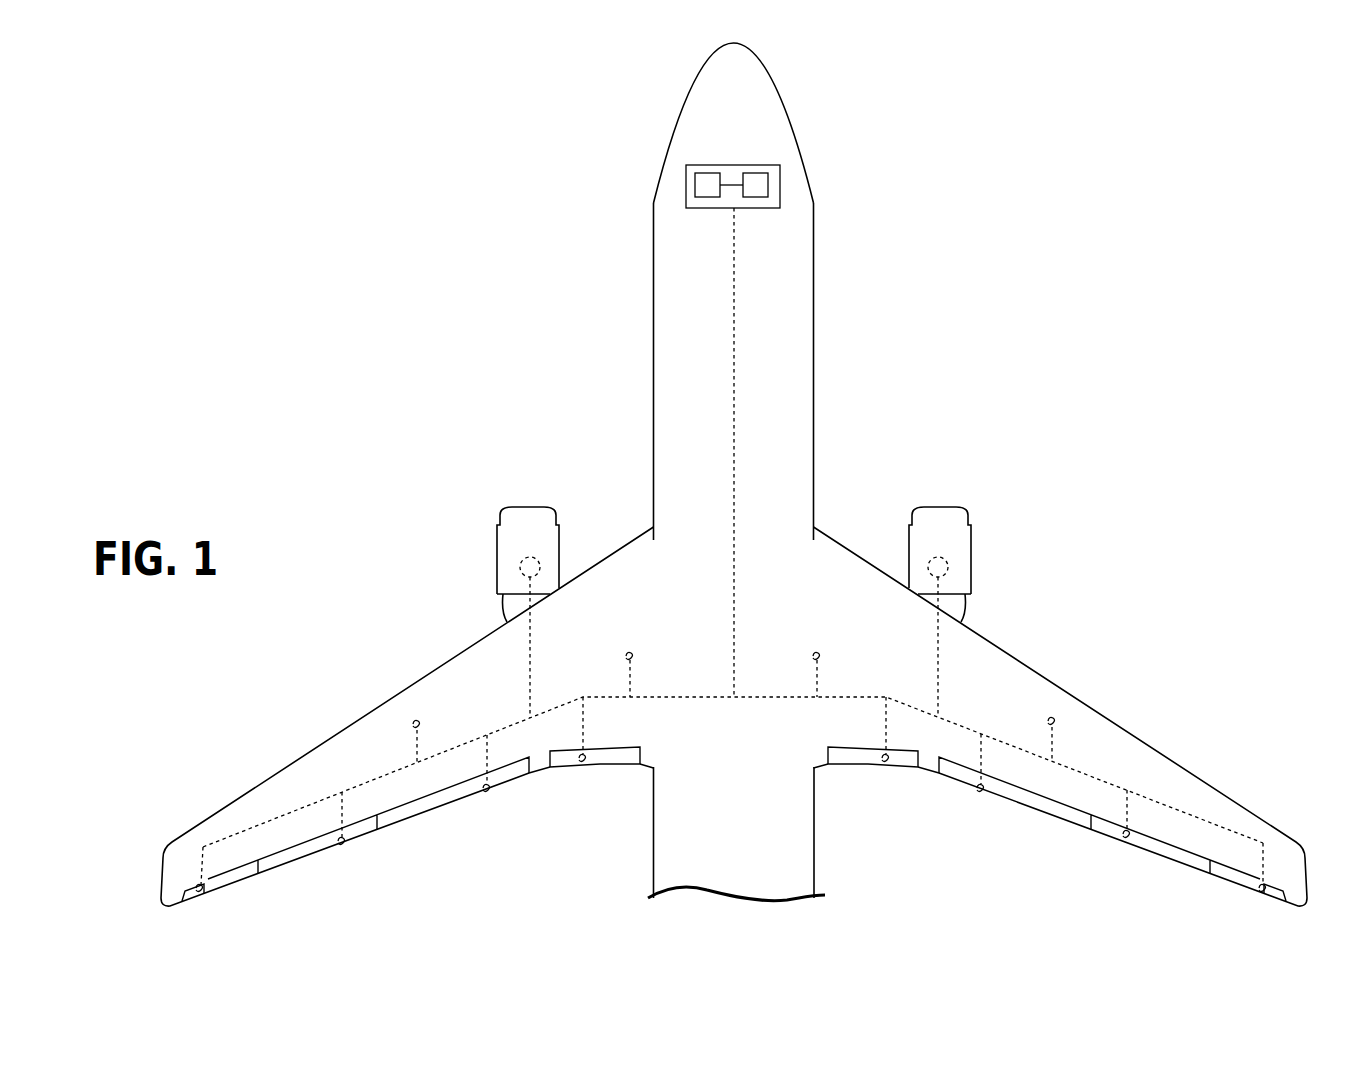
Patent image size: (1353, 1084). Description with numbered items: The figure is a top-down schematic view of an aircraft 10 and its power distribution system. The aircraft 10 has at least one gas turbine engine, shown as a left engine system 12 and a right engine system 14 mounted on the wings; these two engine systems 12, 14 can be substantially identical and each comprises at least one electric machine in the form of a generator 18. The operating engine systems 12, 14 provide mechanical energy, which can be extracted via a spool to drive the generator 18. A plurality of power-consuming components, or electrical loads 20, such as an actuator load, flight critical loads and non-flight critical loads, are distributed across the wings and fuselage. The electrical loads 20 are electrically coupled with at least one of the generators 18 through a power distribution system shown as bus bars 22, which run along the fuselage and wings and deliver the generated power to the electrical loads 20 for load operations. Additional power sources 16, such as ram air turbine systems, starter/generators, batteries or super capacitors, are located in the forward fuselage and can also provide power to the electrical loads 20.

The aircraft 10 is at (526, 74).
The left engine system 12 is at (528, 515).
The right engine system 14 is at (952, 520).
The additional power sources 16 is at (700, 197).
The generator 18 is at (540, 562).
The electrical loads 20 is at (1265, 940).
The bus bars 22 is at (728, 388).